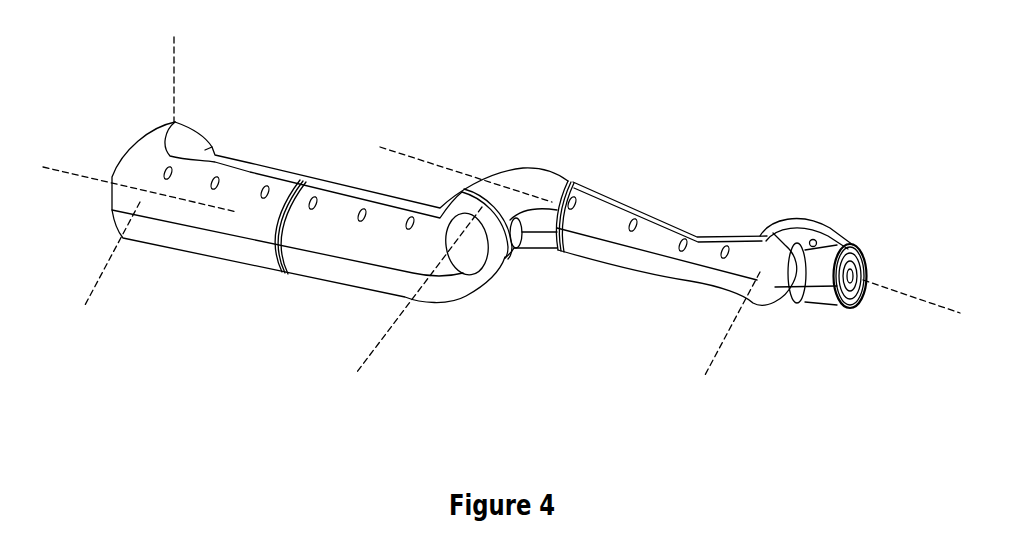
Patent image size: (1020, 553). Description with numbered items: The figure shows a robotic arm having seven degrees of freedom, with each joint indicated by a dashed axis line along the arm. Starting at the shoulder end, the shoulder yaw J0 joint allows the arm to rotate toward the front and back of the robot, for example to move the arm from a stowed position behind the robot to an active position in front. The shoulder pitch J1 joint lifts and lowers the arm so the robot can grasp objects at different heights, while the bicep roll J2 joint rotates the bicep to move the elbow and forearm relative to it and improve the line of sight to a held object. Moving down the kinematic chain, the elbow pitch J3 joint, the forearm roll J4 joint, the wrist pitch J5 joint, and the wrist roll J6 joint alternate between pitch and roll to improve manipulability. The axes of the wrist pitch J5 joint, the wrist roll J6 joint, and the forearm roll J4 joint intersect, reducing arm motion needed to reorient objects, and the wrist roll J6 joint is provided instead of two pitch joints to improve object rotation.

The shoulder yaw joint J0 is at (187, 67).
The shoulder pitch joint J1 is at (108, 275).
The bicep roll joint J2 is at (77, 153).
The elbow pitch joint J3 is at (393, 337).
The forearm roll joint J4 is at (420, 147).
The wrist pitch joint J5 is at (733, 352).
The wrist roll joint J6 is at (912, 273).